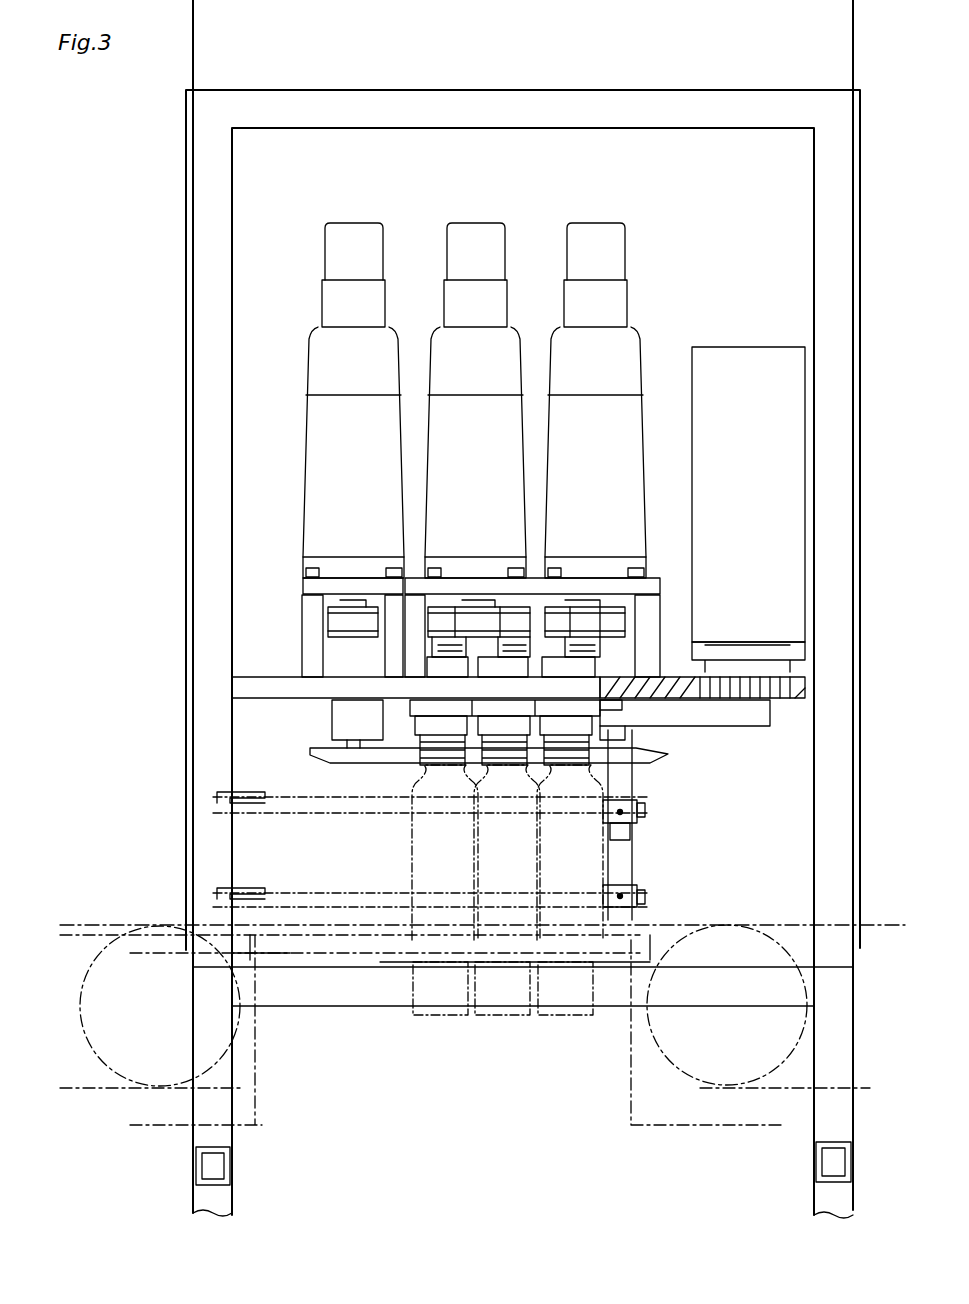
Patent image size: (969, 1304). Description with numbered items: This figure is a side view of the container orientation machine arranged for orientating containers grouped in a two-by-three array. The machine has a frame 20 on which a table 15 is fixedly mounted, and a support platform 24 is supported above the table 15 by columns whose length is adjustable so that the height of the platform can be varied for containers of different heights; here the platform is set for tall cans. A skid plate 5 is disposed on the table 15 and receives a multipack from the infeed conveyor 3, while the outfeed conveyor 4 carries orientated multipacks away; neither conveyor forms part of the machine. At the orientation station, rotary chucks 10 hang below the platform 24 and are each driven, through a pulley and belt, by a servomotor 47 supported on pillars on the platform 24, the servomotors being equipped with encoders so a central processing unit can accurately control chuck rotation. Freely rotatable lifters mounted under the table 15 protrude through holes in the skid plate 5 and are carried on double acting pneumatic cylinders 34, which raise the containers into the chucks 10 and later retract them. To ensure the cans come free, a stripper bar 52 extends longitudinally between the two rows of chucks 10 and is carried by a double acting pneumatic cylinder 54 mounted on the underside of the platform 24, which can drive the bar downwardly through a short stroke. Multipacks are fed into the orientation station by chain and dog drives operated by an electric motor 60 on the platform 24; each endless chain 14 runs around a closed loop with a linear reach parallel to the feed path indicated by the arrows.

The conveyor 3 is at (105, 912).
The conveyor 4 is at (880, 912).
The skid plate 5 is at (292, 928).
The rotary chucks 10 is at (414, 762).
The endless chain 14 is at (343, 813).
The table 15 is at (348, 950).
The frame 20 is at (817, 803).
The support platform 24 is at (280, 688).
The double acting pneumatic cylinder 34 is at (562, 1012).
The servomotor 47 is at (376, 358).
The stripper bar 52 is at (655, 756).
The double acting pneumatic cylinder 54 is at (337, 726).
The electric motor 60 is at (742, 380).